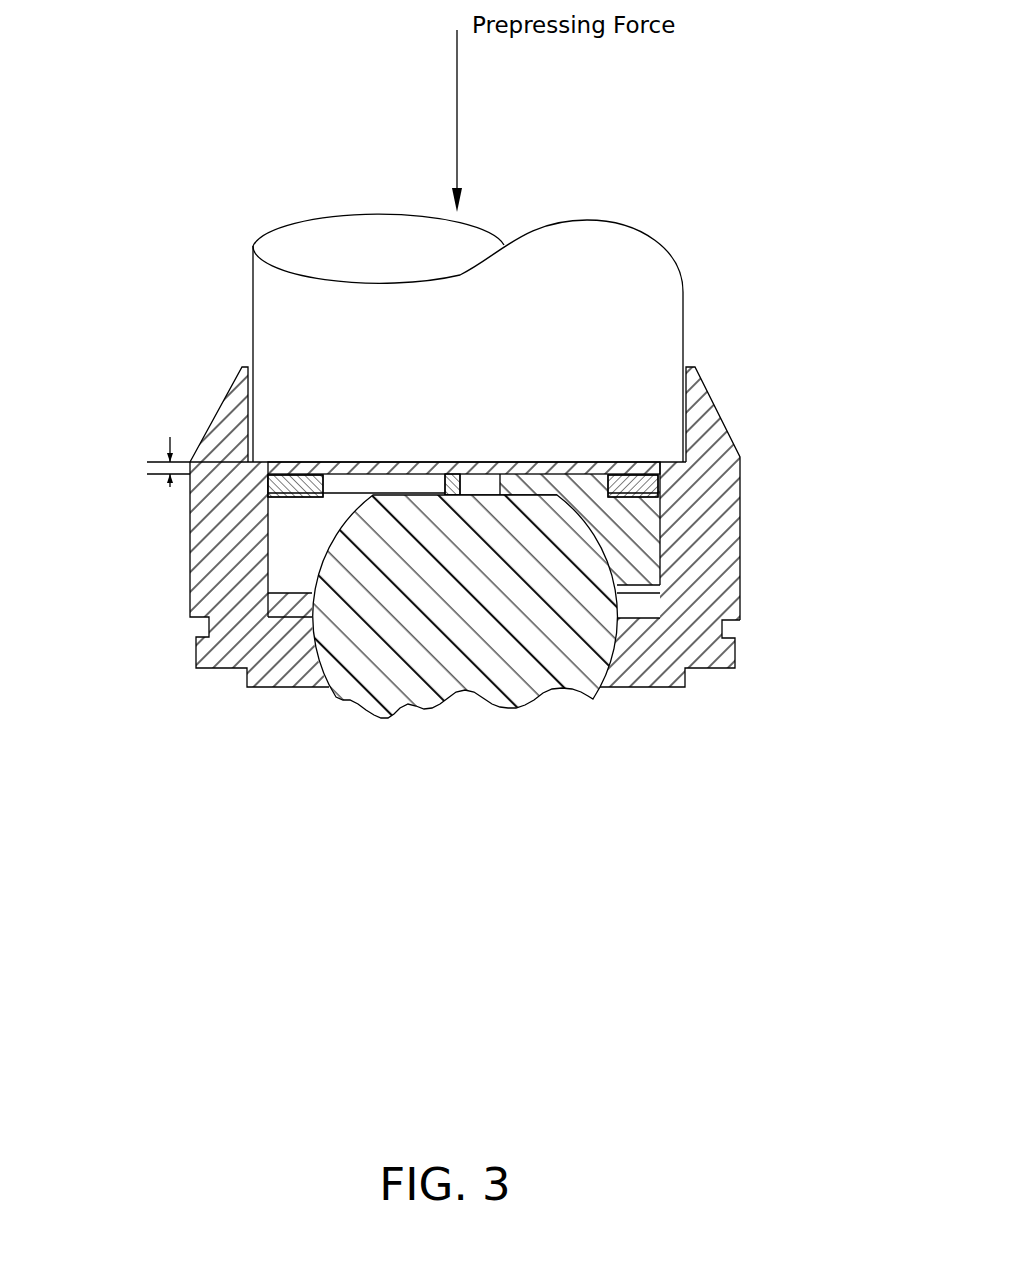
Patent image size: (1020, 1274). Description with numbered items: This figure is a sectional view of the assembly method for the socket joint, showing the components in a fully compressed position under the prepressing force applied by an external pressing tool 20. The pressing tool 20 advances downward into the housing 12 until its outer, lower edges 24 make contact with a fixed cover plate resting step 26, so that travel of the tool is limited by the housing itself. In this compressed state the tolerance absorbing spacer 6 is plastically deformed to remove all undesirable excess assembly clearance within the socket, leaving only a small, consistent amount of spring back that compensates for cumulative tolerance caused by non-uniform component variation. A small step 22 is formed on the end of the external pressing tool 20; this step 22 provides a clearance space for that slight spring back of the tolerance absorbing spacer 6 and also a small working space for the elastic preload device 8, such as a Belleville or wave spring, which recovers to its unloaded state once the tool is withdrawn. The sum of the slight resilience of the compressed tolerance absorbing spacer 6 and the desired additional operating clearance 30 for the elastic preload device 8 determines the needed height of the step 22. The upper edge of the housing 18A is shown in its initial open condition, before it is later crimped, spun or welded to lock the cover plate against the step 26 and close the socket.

The tolerance absorbing spacer 6 is at (296, 498).
The elastic preload device 8 is at (643, 465).
The housing 12 is at (190, 577).
The upper edge of the housing 18A is at (228, 413).
The external pressing tool 20 is at (652, 300).
The small step 22 is at (740, 622).
The outer, lower edges 24 is at (262, 460).
The cover plate resting step 26 is at (240, 492).
The additional operating clearance 30 is at (166, 446).